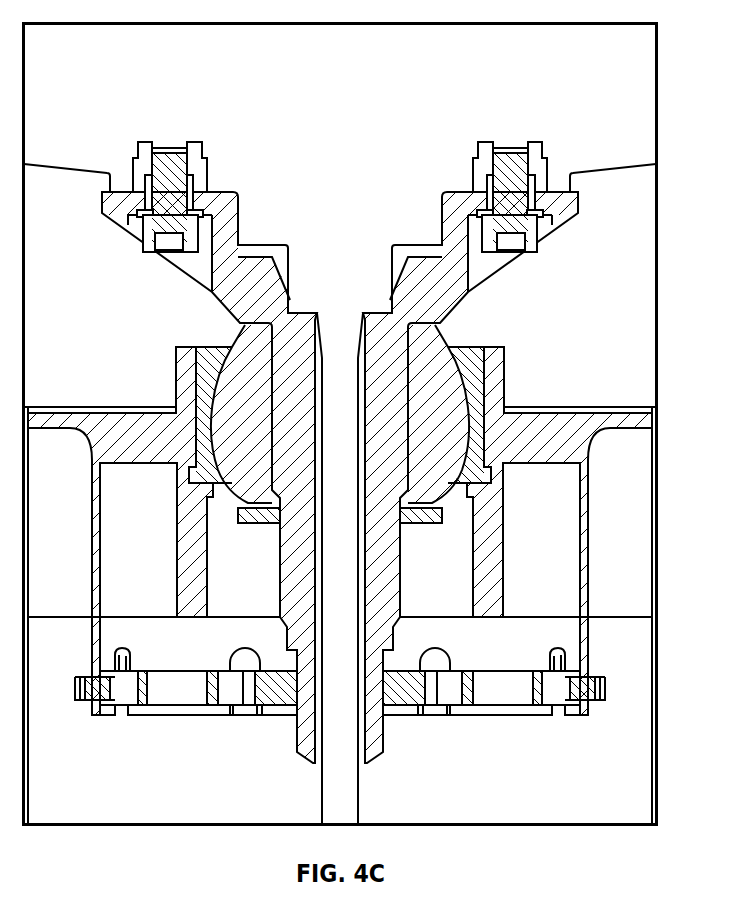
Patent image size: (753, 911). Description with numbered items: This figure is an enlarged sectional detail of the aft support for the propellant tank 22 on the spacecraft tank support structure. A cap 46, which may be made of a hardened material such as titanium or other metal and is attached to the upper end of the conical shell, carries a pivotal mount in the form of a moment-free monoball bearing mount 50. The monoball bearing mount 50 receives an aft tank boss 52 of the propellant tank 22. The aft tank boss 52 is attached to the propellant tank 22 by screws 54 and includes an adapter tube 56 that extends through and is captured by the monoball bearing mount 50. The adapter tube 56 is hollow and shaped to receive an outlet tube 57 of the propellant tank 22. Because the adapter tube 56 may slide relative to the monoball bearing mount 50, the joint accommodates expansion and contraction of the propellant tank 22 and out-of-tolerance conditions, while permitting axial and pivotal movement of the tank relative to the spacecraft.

The propellant tank 22 is at (362, 137).
The cap 46 is at (640, 497).
The monoball bearing mount 50 is at (468, 353).
The aft tank boss 52 is at (243, 303).
The screws 54 is at (153, 230).
The adapter tube 56 is at (383, 407).
The outlet tube 57 is at (338, 583).